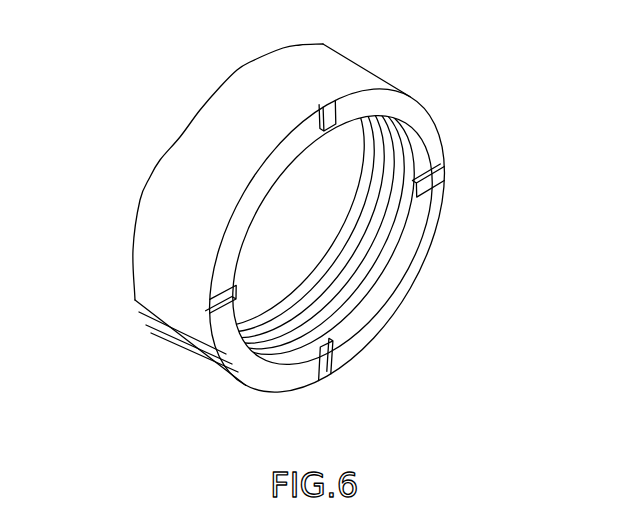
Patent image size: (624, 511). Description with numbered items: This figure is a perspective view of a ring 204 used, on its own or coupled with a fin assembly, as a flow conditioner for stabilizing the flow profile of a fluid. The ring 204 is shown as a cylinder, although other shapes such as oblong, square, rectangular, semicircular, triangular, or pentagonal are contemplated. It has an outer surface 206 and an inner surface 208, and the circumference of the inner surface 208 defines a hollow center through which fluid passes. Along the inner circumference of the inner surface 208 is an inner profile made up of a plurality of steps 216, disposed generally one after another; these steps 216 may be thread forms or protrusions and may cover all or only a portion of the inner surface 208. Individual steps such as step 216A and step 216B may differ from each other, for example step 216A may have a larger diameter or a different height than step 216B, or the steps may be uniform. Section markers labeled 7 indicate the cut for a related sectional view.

The ring 204 is at (129, 205).
The outer surface 206 is at (373, 62).
The inner surface 208 is at (304, 169).
The plurality of steps 216 is at (353, 323).
The step 216A is at (393, 260).
The step 216B is at (367, 215).
The section line for FIG. 7 is at (297, 38).